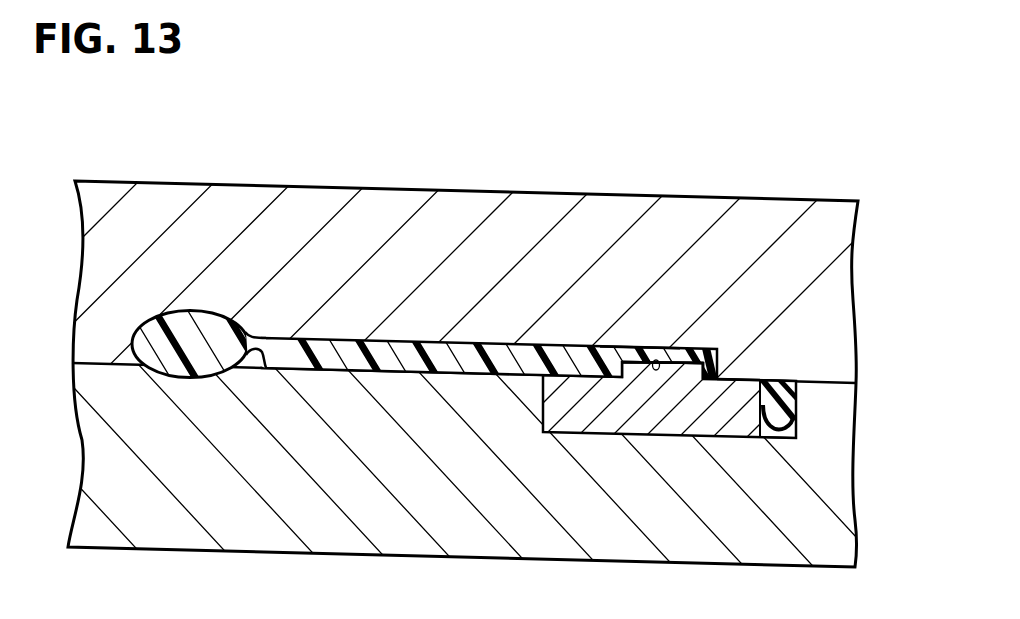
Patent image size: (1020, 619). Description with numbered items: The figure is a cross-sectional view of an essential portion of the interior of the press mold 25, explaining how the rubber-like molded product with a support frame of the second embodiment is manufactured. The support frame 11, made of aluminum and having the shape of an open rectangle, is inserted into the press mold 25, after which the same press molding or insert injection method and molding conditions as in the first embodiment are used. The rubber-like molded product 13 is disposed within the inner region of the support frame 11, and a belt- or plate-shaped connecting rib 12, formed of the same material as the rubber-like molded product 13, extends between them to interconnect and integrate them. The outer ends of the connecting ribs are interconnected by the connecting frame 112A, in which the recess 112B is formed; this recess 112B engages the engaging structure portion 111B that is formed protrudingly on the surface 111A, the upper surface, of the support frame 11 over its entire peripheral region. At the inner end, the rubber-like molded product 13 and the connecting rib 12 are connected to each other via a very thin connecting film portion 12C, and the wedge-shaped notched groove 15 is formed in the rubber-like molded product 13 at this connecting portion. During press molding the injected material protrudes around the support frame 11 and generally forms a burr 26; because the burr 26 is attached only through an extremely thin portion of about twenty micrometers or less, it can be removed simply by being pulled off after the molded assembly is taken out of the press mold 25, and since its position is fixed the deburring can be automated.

The press mold 25 is at (543, 207).
The connecting rib 12 is at (344, 344).
The connecting film portion 12C is at (252, 332).
The rubber-like molded product 13 is at (150, 330).
The wedge-shaped notched groove 15 is at (257, 369).
The connecting frame 112A is at (637, 347).
The recess 112B is at (660, 352).
The engaging structure portion 111B is at (693, 374).
The surface of the support frame 111A is at (752, 374).
The burr 26 is at (790, 396).
The support frame 11 is at (661, 433).